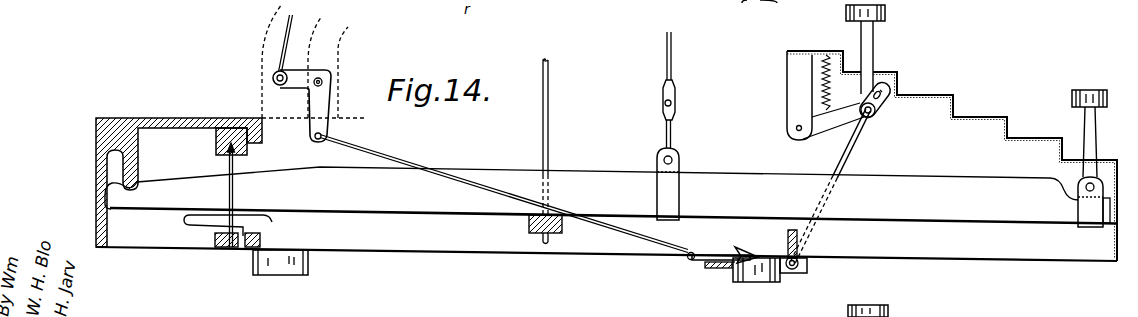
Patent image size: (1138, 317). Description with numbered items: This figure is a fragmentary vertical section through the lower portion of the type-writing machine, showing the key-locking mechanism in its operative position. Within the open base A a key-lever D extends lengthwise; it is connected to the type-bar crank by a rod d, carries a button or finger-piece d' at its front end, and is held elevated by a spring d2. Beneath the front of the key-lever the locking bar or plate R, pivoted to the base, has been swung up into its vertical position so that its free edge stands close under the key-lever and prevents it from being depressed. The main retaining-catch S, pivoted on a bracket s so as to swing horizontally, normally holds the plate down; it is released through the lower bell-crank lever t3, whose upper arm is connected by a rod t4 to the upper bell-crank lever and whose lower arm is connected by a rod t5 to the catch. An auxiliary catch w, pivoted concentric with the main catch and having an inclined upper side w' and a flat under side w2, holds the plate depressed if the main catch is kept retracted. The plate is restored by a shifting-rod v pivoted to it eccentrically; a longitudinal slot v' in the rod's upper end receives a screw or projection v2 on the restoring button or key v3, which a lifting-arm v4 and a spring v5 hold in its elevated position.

The open base A is at (985, 287).
The key-lever D is at (970, 208).
The locking bar or plate R is at (803, 236).
The main retaining-catch S is at (716, 255).
The bracket s is at (708, 268).
The auxiliary catch w is at (721, 282).
The inclined upper side w' is at (751, 247).
The flat under side w2 is at (748, 283).
The rod d is at (674, 126).
The button or finger-piece d' is at (1092, 158).
The spring d2 is at (238, 195).
The lower bell-crank lever t3 is at (306, 92).
The rod t4 is at (280, 42).
The rod t5 is at (507, 197).
The shifting-rod v is at (829, 186).
The longitudinal slot v' is at (905, 79).
The screw or projection v2 is at (876, 110).
The restoring button or key v3 is at (872, 49).
The lifting-arm v4 is at (806, 140).
The spring v5 is at (822, 83).